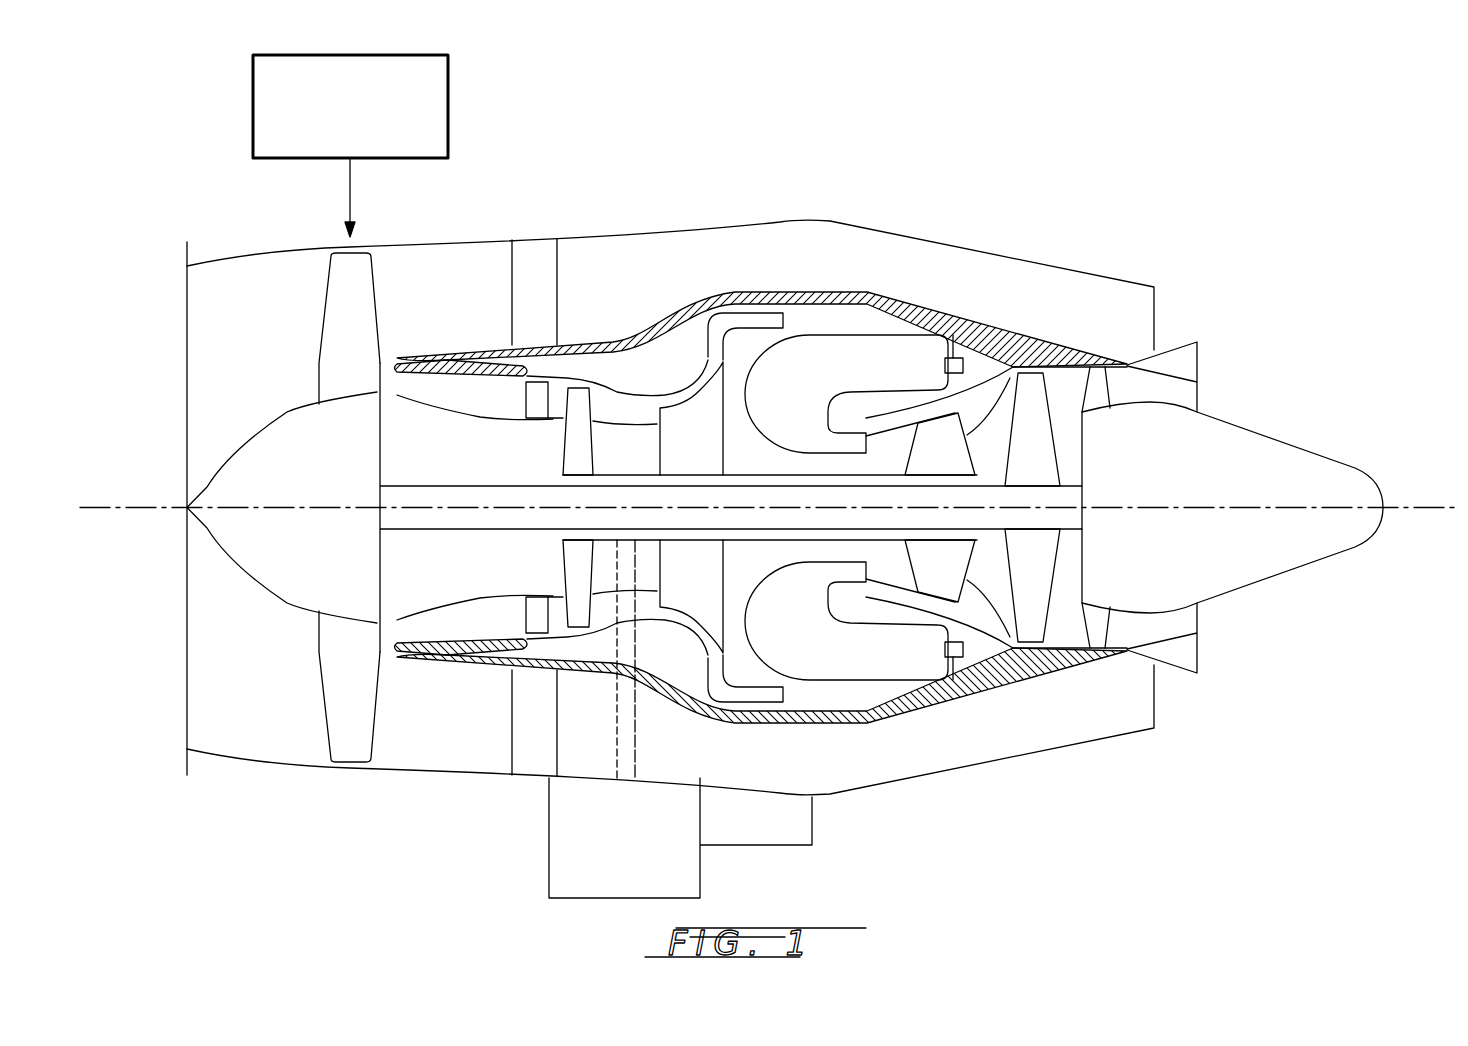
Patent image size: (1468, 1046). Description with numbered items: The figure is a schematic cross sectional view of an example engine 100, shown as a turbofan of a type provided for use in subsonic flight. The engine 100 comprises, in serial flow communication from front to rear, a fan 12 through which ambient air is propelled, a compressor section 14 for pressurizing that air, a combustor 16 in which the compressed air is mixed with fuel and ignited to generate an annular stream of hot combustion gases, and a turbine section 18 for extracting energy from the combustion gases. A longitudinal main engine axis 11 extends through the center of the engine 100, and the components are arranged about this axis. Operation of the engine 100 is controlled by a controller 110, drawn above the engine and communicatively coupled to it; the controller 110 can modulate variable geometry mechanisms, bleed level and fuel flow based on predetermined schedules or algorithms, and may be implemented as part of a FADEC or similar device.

The engine 100 is at (1012, 168).
The controller 110 is at (253, 100).
The fan 12 is at (340, 668).
The compressor section 14 is at (613, 403).
The combustor 16 is at (847, 357).
The turbine section 18 is at (988, 577).
The longitudinal main engine axis 11 is at (1423, 505).